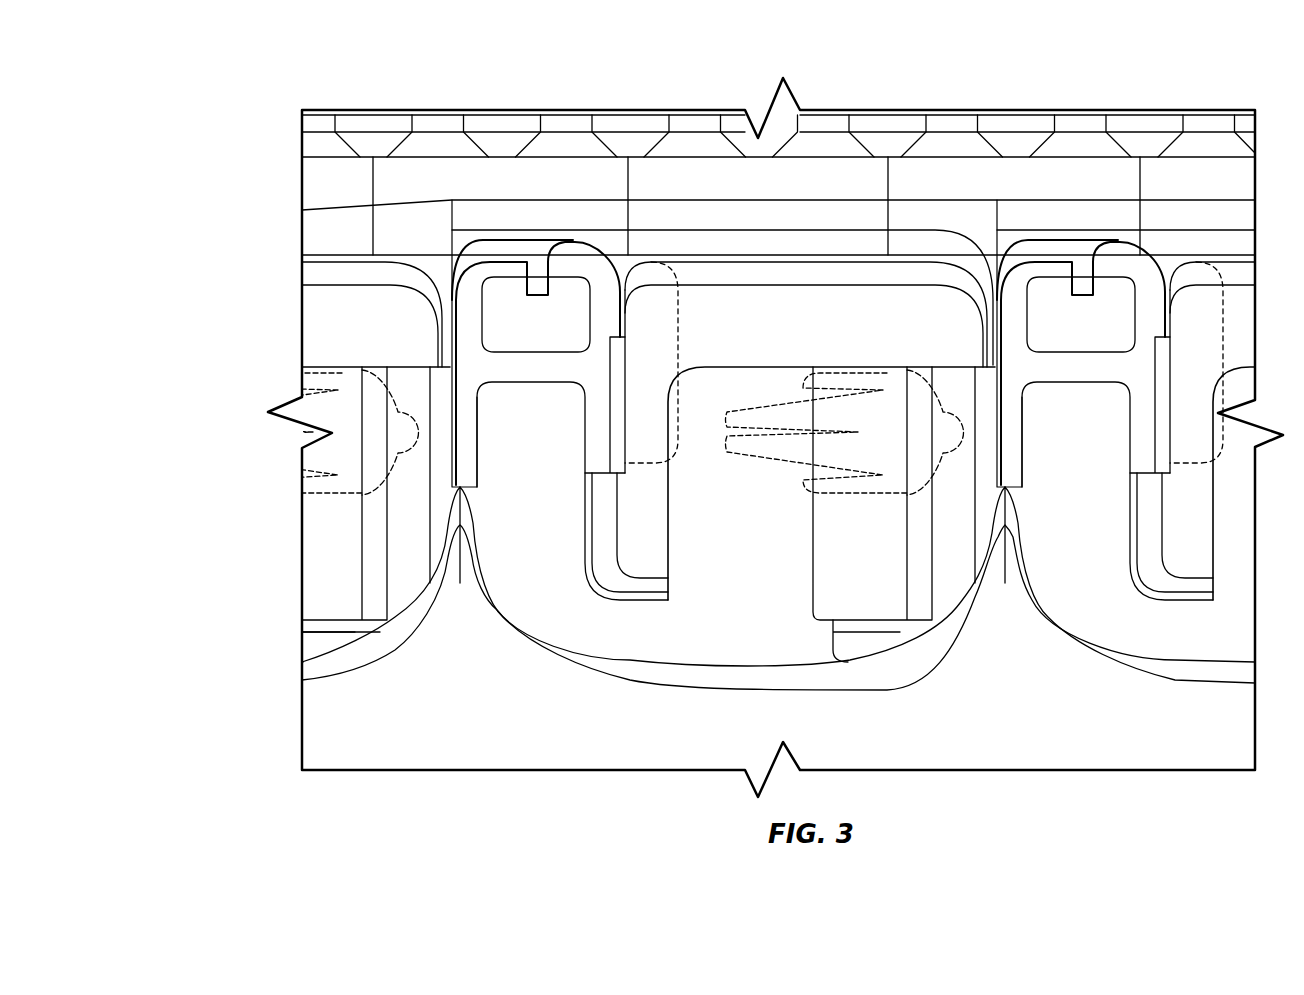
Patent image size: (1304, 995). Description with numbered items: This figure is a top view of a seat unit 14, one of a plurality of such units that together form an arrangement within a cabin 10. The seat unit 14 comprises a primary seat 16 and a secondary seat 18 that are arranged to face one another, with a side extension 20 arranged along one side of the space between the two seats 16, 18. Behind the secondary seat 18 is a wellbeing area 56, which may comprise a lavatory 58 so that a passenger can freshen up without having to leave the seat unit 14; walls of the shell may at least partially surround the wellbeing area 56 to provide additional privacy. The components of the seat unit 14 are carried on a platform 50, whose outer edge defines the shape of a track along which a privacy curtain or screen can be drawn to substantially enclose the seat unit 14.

The cabin 10 is at (495, 108).
The seat unit 14 is at (702, 273).
The primary seat 16 is at (905, 577).
The secondary seat 18 is at (632, 570).
The side extension 20 is at (830, 308).
The platform 50 is at (697, 627).
The wellbeing area 56 is at (493, 446).
The lavatory 58 is at (495, 322).